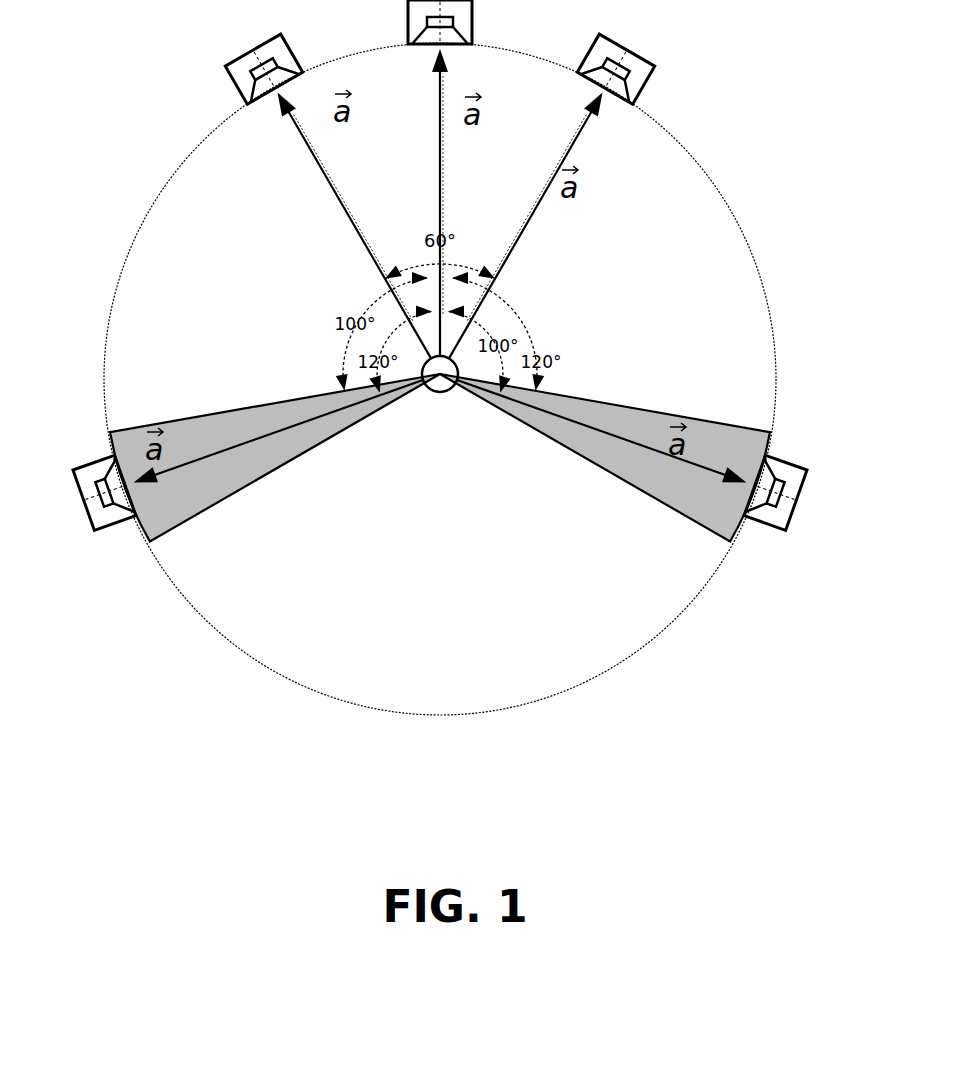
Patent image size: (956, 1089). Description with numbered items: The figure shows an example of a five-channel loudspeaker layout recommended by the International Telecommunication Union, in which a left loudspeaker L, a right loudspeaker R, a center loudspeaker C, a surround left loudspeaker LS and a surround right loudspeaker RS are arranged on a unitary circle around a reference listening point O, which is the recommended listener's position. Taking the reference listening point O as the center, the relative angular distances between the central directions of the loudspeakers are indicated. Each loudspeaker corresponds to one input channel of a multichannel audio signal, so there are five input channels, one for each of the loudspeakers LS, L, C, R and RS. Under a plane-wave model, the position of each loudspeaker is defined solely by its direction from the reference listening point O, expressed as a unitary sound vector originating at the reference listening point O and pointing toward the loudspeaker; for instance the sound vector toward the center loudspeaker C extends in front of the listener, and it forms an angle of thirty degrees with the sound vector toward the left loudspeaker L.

The reference listening point O is at (440, 374).
The center loudspeaker C is at (453, 178).
The left loudspeaker L is at (331, 193).
The right loudspeaker R is at (548, 192).
The surround left loudspeaker LS is at (236, 451).
The surround right loudspeaker RS is at (638, 451).